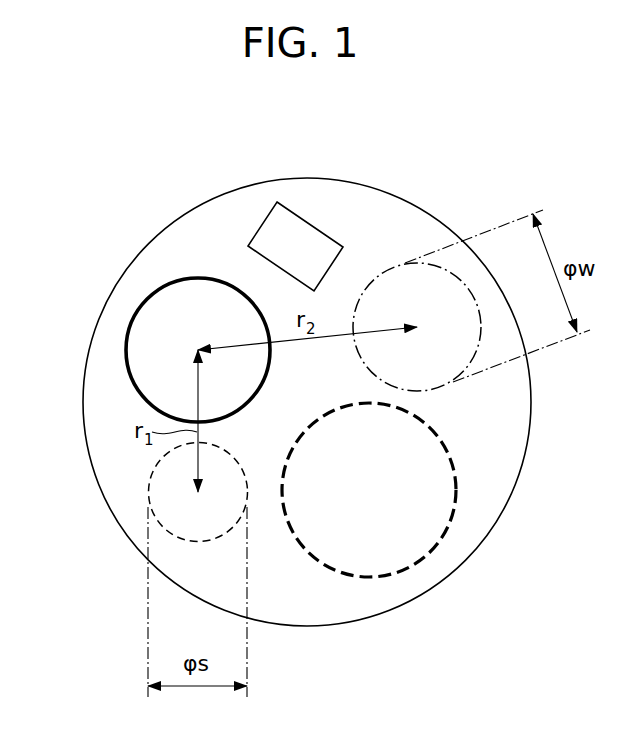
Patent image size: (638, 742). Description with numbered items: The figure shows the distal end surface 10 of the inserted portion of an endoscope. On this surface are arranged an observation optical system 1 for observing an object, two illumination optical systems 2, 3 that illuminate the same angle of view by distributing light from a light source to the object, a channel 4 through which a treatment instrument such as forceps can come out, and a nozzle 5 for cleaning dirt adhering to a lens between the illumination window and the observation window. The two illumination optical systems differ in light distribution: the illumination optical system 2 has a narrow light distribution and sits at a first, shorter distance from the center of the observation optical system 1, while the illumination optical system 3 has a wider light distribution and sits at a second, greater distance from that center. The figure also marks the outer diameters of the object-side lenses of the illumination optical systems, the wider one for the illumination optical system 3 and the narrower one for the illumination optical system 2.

The observation optical system 1 is at (125, 347).
The illumination optical system 2 is at (148, 490).
The illumination optical system 3 is at (390, 268).
The channel 4 is at (417, 560).
The nozzle 5 is at (268, 210).
The distal end surface 10 is at (410, 200).